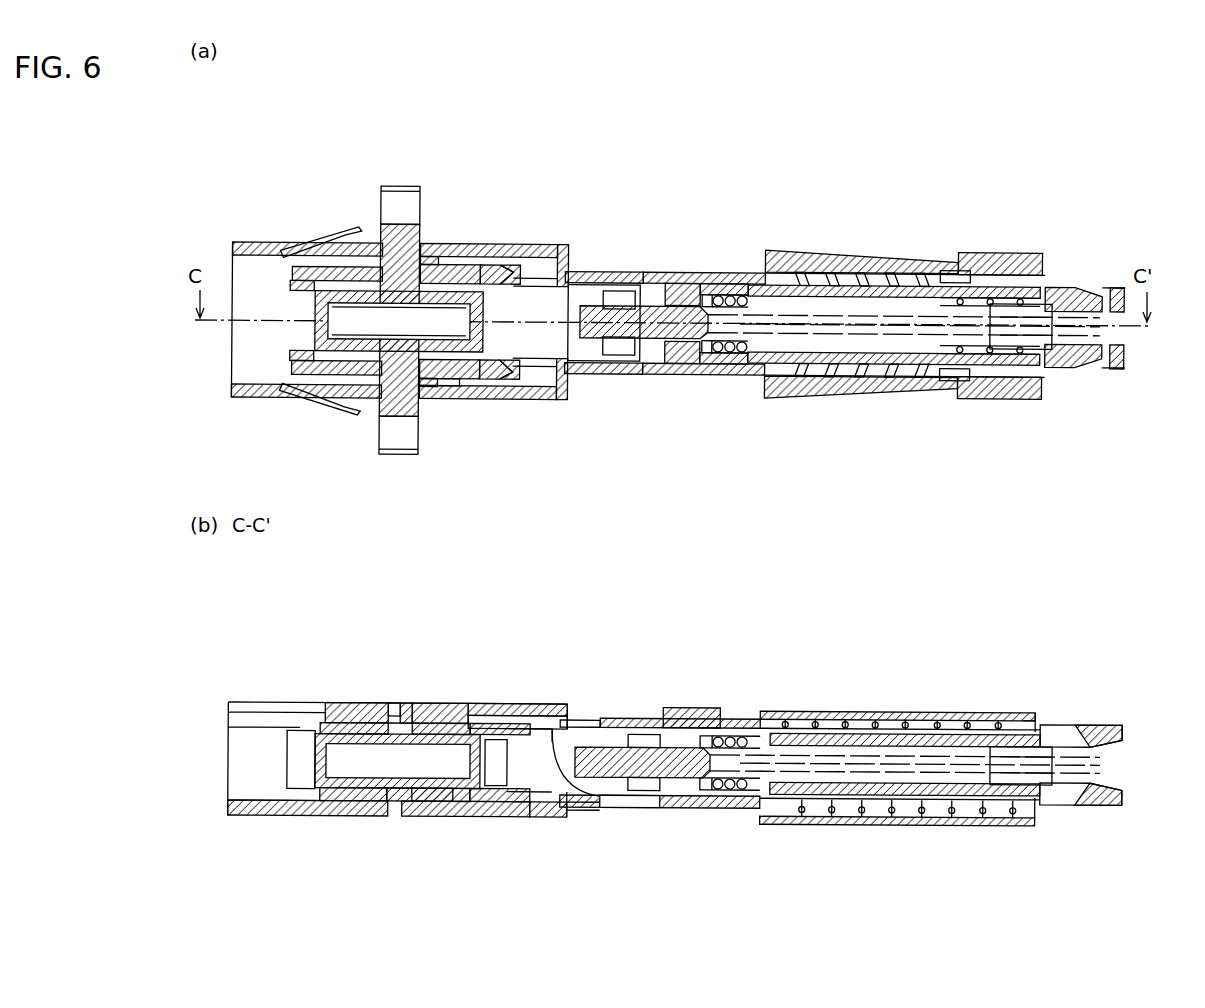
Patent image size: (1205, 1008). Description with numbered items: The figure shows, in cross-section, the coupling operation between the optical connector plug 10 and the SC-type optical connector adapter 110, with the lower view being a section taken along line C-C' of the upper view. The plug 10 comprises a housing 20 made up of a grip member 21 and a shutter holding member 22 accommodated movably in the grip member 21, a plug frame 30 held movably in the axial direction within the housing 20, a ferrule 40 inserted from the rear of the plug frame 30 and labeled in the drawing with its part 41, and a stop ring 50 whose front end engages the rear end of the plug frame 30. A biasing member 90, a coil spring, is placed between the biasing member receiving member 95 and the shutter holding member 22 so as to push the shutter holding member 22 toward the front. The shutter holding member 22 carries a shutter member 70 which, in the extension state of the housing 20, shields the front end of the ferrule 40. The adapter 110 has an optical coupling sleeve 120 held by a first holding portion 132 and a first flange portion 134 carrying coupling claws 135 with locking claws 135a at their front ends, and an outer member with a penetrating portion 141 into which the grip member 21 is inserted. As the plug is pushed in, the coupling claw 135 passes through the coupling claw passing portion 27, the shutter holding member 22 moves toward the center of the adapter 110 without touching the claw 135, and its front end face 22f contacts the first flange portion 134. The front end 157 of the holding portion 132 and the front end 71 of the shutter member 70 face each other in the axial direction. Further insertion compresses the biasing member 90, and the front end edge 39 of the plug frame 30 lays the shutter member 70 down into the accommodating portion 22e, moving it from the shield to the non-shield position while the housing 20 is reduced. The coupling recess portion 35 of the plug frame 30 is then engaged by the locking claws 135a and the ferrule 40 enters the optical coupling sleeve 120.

The optical connector plug 10 is at (874, 88).
The optical connector adapter 110 is at (420, 75).
The housing 20 is at (932, 162).
The grip member 21 is at (915, 268).
The shutter holding member 22 is at (596, 272).
The accommodating portion 22e is at (518, 795).
The front end face 22f is at (432, 264).
The coupling claw passing portion 27 is at (425, 386).
The plug frame 30 is at (702, 290).
The coupling recess portion 35 is at (672, 282).
The front end edge 39 is at (618, 800).
The ferrule 40 is at (1021, 544).
The valve rod 41 is at (620, 350).
The stop ring 50 is at (846, 392).
The shutter member 70 is at (568, 742).
The front end 71 is at (553, 730).
The biasing member 90 is at (875, 282).
The biasing member receiving member 95 is at (1040, 282).
The optical coupling sleeve 120 is at (396, 712).
The first holding portion 132 is at (460, 352).
The first flange portion 134 is at (400, 196).
The coupling claw 135 is at (470, 264).
The locking claw 135a is at (490, 280).
The penetrating portion 141 is at (580, 382).
The front end 157 is at (315, 310).